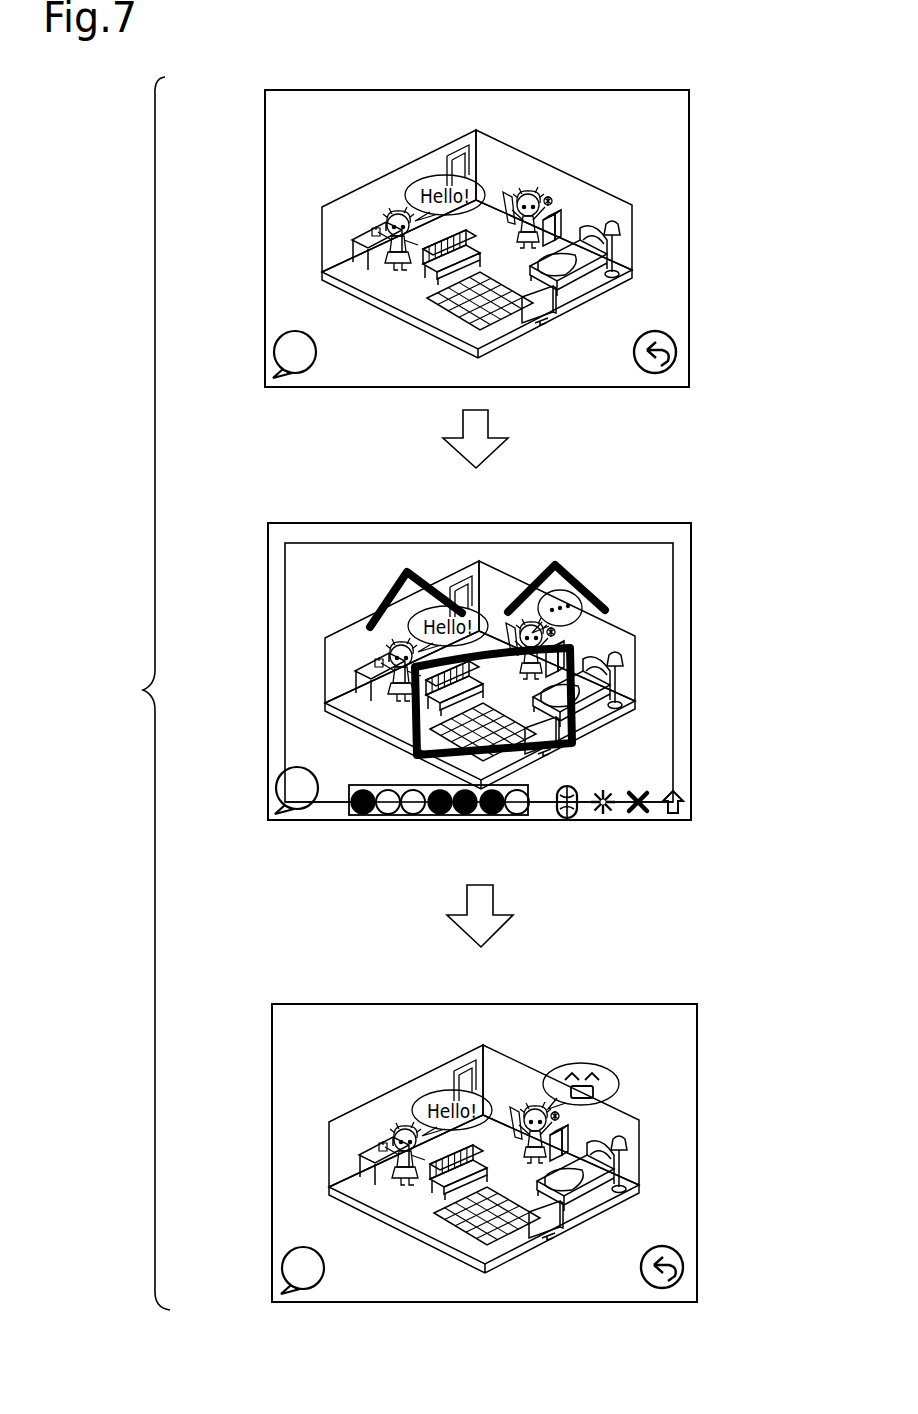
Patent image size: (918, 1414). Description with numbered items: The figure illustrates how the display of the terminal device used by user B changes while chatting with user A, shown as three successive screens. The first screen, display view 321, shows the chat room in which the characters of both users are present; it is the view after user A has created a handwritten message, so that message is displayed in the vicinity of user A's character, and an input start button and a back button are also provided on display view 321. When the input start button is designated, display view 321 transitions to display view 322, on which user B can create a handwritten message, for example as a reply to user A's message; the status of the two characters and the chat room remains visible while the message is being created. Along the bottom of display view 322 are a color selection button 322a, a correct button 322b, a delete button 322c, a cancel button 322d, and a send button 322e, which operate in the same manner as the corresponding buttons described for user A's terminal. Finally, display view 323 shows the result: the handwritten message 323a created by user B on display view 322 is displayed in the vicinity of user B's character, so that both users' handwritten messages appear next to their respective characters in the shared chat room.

The display view 321 is at (689, 166).
The display view 322 is at (691, 622).
The color selection button 322a is at (390, 816).
The correct button 322b is at (564, 818).
The delete button 322c is at (603, 815).
The cancel button 322d is at (640, 815).
The send button 322e is at (683, 799).
The display view 323 is at (697, 1078).
The handwritten message 323a is at (612, 1080).